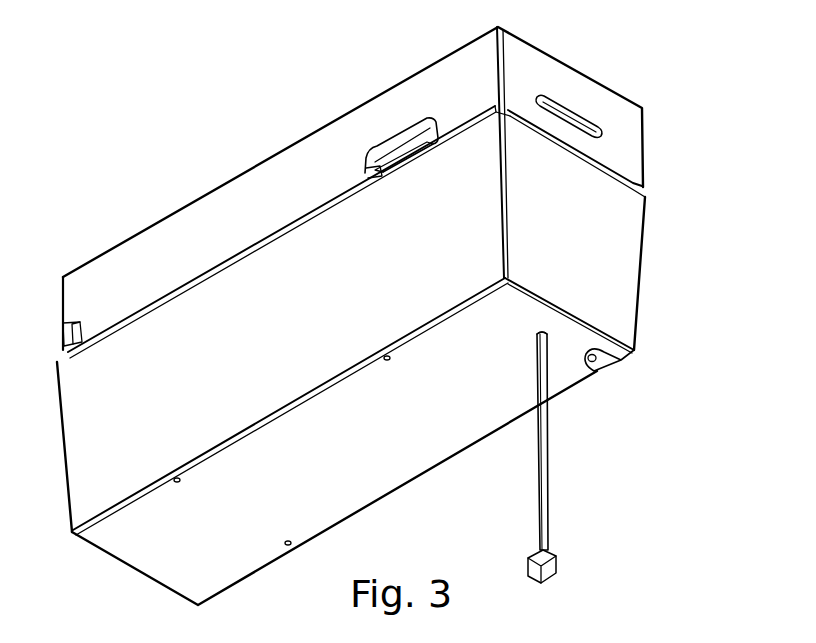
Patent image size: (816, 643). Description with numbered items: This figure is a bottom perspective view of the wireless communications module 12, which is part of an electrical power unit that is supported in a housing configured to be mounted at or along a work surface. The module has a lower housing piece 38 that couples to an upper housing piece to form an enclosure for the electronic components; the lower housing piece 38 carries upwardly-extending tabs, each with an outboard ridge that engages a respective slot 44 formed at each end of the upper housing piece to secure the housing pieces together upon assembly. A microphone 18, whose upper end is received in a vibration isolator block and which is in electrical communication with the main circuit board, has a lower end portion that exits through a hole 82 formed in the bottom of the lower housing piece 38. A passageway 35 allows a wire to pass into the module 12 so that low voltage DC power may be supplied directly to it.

The wireless communications module 12 is at (90, 144).
The microphone 18 is at (545, 472).
The passageway 35 is at (618, 364).
The lower housing piece 38 is at (623, 258).
The slot 44 is at (585, 113).
The hole 82 is at (531, 334).